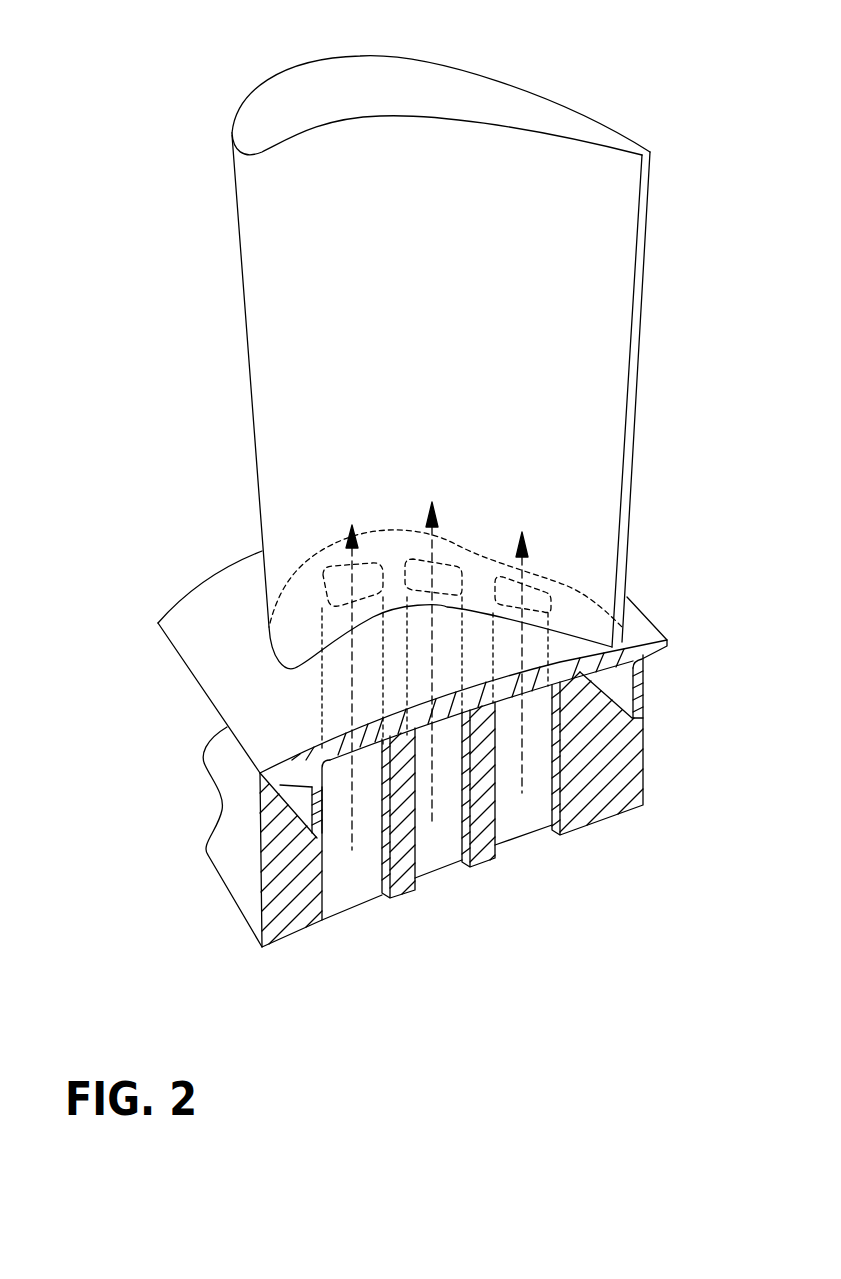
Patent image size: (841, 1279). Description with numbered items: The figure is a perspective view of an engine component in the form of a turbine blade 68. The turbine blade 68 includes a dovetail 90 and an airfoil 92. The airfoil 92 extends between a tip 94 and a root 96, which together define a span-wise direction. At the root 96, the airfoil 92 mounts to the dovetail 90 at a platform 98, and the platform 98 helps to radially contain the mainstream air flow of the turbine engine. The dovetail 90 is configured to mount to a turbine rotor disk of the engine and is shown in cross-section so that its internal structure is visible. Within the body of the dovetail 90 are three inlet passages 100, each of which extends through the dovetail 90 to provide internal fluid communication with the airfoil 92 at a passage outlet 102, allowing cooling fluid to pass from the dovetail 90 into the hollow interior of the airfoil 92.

The turbine blade 68 is at (107, 154).
The dovetail 90 is at (247, 825).
The airfoil 92 is at (252, 437).
The tip 94 is at (325, 97).
The root 96 is at (577, 627).
The platform 98 is at (230, 658).
The inlet passage 100 is at (522, 877).
The passage outlet 102 is at (443, 562).